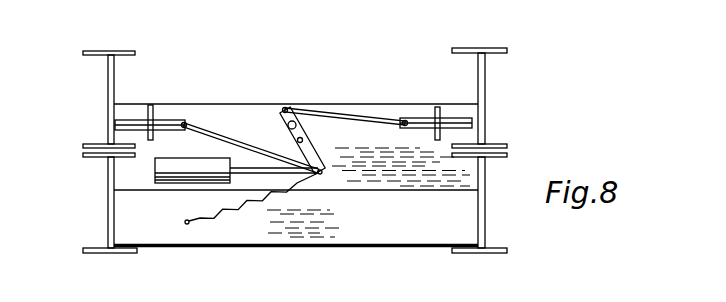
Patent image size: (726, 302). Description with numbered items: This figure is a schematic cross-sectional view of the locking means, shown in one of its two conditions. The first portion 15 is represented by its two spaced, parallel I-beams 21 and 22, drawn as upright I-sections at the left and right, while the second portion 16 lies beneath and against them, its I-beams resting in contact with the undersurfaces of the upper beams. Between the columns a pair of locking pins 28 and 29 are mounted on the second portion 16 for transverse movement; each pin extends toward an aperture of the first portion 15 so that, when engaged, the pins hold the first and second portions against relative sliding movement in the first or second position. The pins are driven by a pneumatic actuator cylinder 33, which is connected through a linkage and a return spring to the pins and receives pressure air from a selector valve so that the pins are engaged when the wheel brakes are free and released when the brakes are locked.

The first portion 15 is at (107, 80).
The second portion 16 is at (108, 211).
The I-beam 21 is at (98, 52).
The I-beam 22 is at (486, 72).
The locking pin 28 is at (170, 123).
The locking pin 29 is at (425, 123).
The pneumatic actuator cylinder 33 is at (182, 168).